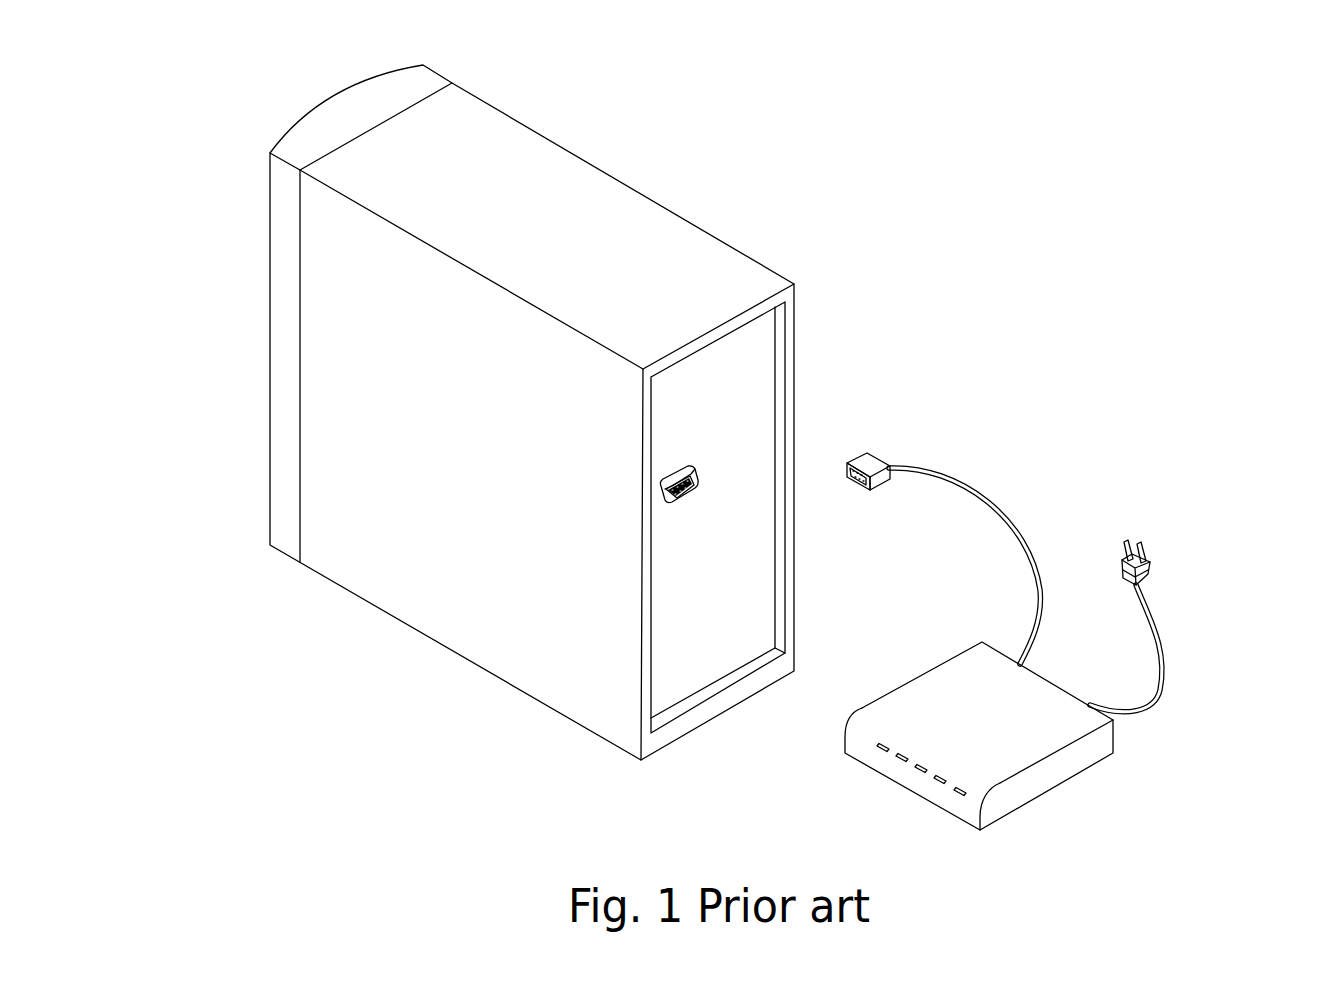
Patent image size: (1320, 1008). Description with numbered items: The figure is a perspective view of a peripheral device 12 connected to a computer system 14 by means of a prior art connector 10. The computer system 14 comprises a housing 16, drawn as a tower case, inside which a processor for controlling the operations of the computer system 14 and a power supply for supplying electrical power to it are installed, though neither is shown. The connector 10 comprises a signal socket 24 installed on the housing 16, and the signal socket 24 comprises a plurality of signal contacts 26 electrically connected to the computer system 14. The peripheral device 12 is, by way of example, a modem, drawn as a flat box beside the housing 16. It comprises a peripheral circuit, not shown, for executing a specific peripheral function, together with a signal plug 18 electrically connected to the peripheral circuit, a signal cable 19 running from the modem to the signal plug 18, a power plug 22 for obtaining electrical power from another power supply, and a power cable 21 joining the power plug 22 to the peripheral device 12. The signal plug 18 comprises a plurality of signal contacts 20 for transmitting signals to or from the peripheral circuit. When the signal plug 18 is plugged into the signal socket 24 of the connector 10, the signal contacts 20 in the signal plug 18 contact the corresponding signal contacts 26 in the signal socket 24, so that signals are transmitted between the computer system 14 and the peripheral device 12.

The connector 10 is at (698, 505).
The peripheral device 12 is at (1040, 777).
The computer system 14 is at (827, 228).
The housing 16 is at (352, 573).
The signal plug 18 is at (885, 469).
The signal cable 19 is at (972, 490).
The signal contacts 20 is at (862, 485).
The power cable 21 is at (1165, 670).
The power plug 22 is at (1152, 565).
The signal socket 24 is at (677, 475).
The signal contacts 26 is at (668, 498).